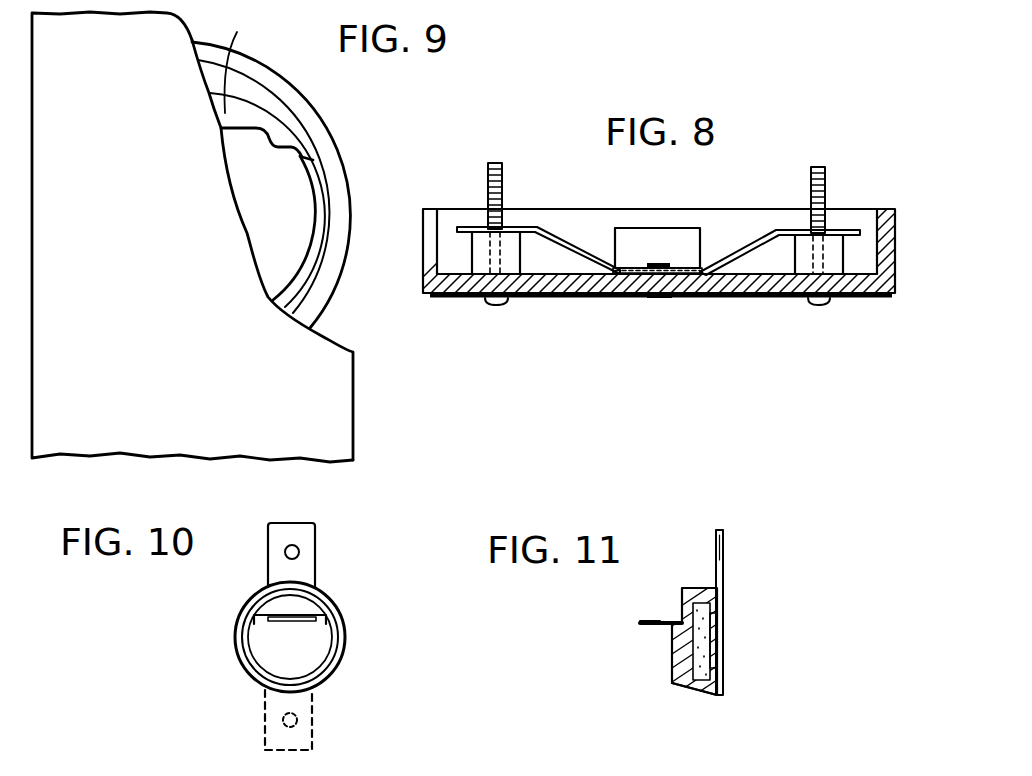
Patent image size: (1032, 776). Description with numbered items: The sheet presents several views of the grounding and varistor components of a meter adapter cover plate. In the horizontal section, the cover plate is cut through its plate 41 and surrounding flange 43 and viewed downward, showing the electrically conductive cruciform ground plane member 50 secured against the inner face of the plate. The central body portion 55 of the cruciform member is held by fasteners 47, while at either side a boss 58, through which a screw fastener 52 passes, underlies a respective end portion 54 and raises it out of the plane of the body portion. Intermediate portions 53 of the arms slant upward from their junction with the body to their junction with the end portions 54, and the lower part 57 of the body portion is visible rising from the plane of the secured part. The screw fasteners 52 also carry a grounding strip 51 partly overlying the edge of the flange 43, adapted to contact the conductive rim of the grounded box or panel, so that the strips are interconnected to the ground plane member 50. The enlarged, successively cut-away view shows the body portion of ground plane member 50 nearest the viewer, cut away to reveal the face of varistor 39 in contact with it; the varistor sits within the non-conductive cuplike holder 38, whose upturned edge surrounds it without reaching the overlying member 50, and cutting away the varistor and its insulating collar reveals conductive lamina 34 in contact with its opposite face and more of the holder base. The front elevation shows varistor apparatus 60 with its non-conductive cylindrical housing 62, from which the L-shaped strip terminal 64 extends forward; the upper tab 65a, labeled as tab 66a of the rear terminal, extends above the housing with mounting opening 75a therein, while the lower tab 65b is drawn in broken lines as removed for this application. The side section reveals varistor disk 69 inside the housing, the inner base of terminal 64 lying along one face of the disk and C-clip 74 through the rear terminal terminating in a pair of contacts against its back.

In FIG. 9, the conductive lamina 34 is at (237, 32).
In FIG. 9, the cuplike holder 38 is at (282, 118).
In FIG. 9, the varistor 39 is at (292, 222).
In FIG. 9, the ground plane member 50 is at (355, 382).
In FIG. 9, the body portion 55 is at (158, 264).
In FIG. 8, the body portion 55 is at (620, 268).
In FIG. 8, the plate 41 is at (735, 298).
In FIG. 8, the flange 43 is at (866, 378).
In FIG. 8, the fastener 47 is at (660, 263).
In FIG. 8, the grounding strip 51 is at (468, 300).
In FIG. 8, the screw fastener 52 is at (503, 171).
In FIG. 8, the intermediate portion 53 is at (665, 228).
In FIG. 8, the end portion 54 is at (505, 228).
In FIG. 8, the lower part 57 is at (690, 228).
In FIG. 8, the boss 58 is at (520, 256).
In FIG. 10, the varistor apparatus 60 is at (218, 643).
In FIG. 11, the varistor apparatus 60 is at (767, 615).
In FIG. 10, the cylindrical housing 62 is at (345, 652).
In FIG. 11, the cylindrical housing 62 is at (677, 595).
In FIG. 10, the strip terminal 64 is at (272, 622).
In FIG. 11, the strip terminal 64 is at (650, 627).
In FIG. 10, the upper tab 65a is at (303, 538).
In FIG. 10, the lower tab 65b is at (313, 720).
In FIG. 11, the tab 66a is at (724, 542).
In FIG. 11, the varistor disk 69 is at (683, 690).
In FIG. 11, the C-clip 74 is at (722, 645).
In FIG. 10, the mounting opening 75a is at (298, 555).